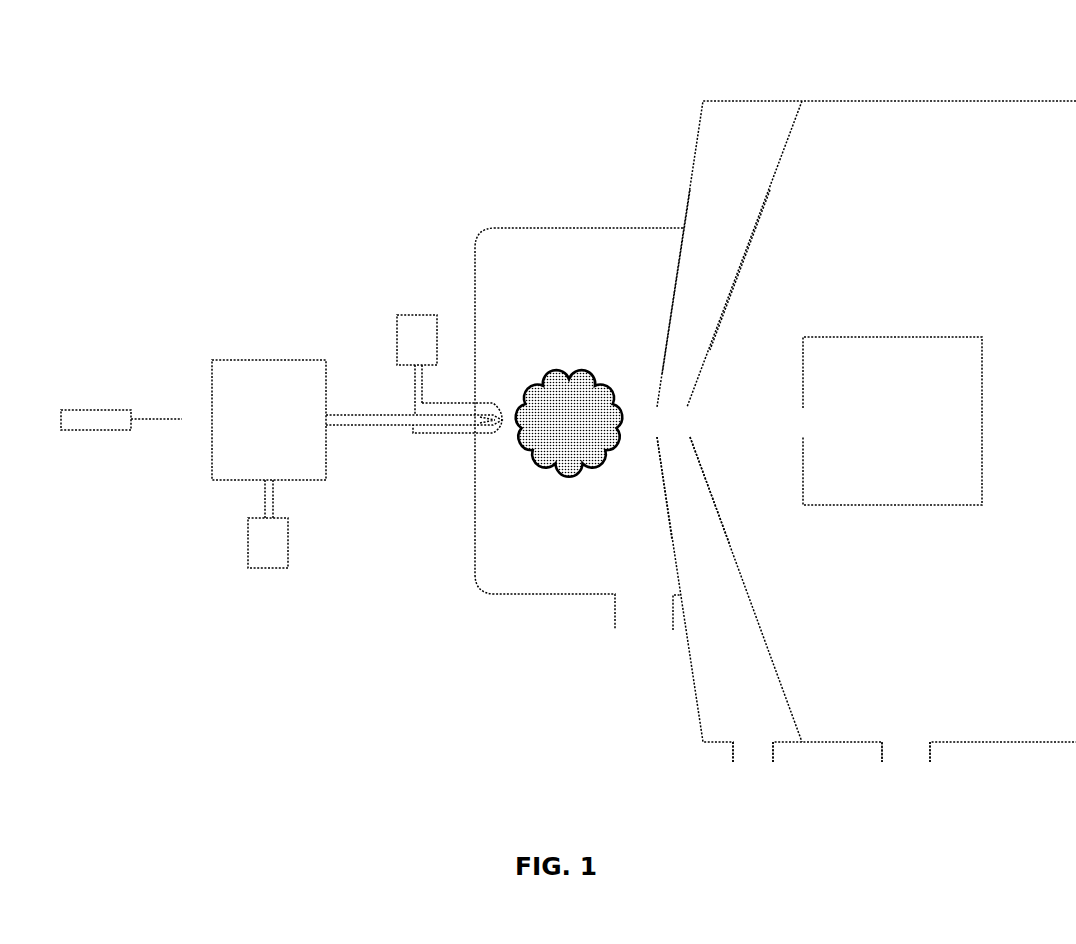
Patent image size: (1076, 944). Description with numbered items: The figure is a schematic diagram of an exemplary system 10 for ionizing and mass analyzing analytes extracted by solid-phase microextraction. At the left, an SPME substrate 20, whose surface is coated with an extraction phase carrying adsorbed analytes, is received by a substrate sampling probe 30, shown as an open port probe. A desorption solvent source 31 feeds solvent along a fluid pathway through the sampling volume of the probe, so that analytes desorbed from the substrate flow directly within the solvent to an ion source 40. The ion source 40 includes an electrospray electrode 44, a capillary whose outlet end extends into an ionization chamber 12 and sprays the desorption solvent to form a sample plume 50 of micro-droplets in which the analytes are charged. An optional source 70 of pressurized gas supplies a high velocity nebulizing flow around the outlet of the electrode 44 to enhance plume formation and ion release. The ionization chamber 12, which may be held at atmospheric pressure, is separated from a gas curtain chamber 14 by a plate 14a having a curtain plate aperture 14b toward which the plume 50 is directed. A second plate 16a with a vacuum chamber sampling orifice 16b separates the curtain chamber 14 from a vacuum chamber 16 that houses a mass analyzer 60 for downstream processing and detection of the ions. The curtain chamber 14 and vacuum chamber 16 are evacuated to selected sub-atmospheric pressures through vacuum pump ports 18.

The system 10 is at (210, 127).
The ionization chamber 12 is at (533, 283).
The gas curtain chamber 14 is at (752, 165).
The plate 14a is at (671, 292).
The curtain plate aperture 14b is at (648, 440).
The vacuum chamber 16 is at (855, 165).
The plate 16a is at (747, 252).
The vacuum chamber sampling orifice 16b is at (716, 432).
The vacuum pump ports 18 is at (917, 775).
The SPME substrate 20 is at (107, 388).
The substrate sampling probe 30 is at (267, 345).
The desorption solvent source 31 is at (268, 524).
The ion source 40 is at (435, 458).
The electrospray electrode 44 is at (465, 413).
The sample plume 50 is at (569, 423).
The mass analyzer 60 is at (892, 421).
The source of pressurized gas 70 is at (417, 365).